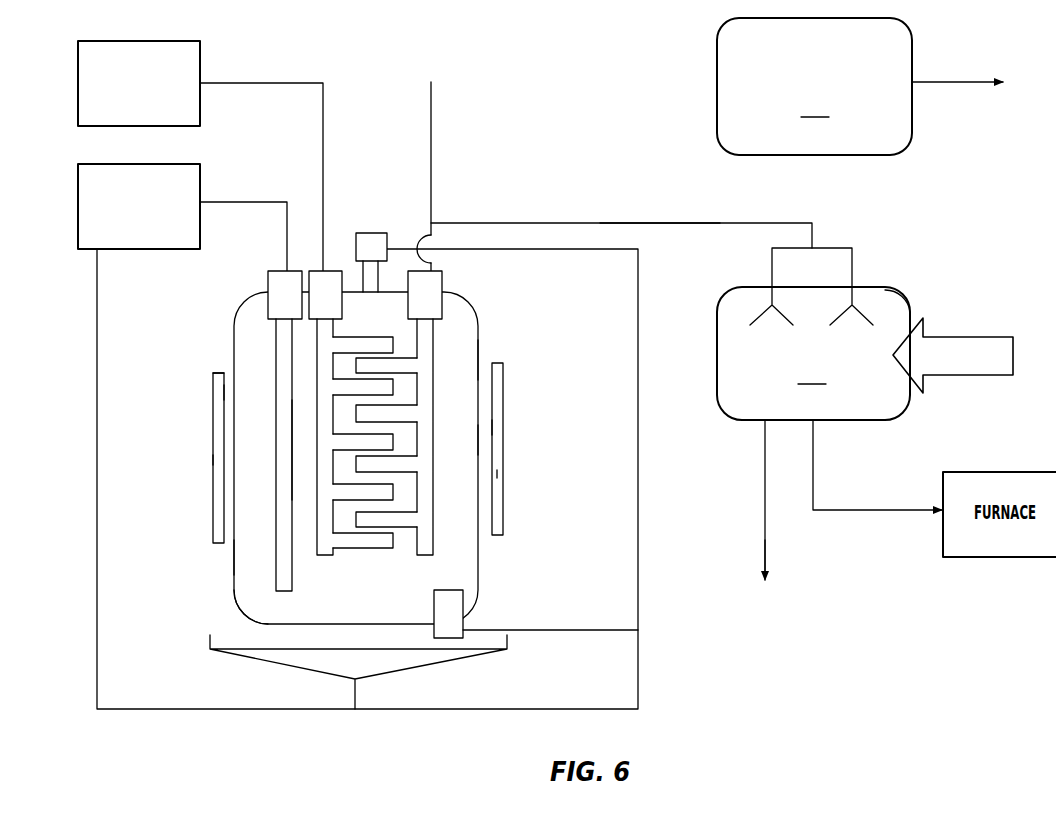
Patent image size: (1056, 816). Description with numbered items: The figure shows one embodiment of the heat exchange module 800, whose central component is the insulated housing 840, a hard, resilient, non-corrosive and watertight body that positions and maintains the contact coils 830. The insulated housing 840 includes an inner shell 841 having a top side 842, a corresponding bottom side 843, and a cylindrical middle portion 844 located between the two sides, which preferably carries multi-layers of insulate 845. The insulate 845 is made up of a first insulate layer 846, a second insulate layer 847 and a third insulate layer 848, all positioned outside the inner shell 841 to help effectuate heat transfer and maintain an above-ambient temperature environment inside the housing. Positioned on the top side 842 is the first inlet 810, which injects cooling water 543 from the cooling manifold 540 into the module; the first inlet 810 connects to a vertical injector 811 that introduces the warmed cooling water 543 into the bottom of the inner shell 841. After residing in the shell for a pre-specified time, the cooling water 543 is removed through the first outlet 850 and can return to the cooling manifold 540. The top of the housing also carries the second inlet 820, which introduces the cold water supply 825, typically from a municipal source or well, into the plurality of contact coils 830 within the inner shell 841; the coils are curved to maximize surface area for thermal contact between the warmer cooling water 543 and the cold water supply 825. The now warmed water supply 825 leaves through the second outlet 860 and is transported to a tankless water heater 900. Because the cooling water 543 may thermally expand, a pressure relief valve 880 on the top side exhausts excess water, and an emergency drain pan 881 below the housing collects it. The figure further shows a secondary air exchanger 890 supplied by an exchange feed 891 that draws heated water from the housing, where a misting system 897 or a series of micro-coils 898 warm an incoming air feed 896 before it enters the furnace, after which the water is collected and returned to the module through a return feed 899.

The cold water supply 825 is at (758, 223).
The cooling manifold 540 is at (139, 206).
The cooling water 543 is at (264, 202).
The heat exchange module 800 is at (348, 598).
The pressure relief valve 880 is at (367, 242).
The top side 842 is at (266, 300).
The second inlet 820 is at (328, 280).
The second outlet 860 is at (427, 290).
The first inlet 810 is at (272, 306).
The vertical injector 811 is at (282, 433).
The insulate 845 is at (213, 420).
The first insulate layer 846 is at (213, 378).
The third insulate layer 848 is at (223, 391).
The second insulate layer 847 is at (210, 459).
The insulated housing 840 is at (478, 357).
The cylindrical middle portion 844 is at (478, 440).
The inner shell 841 is at (233, 562).
The bottom side 843 is at (242, 606).
The contact coils 830 is at (408, 528).
The first outlet 850 is at (448, 601).
The emergency drain pan 881 is at (267, 662).
The tankless water heater 900 is at (860, 86).
The exchange feed 891 is at (657, 223).
The secondary air exchanger 890 is at (829, 433).
The micro-coils 898 is at (770, 297).
The misting system 897 is at (878, 310).
The incoming air feed 896 is at (938, 365).
The return feed 899 is at (769, 576).